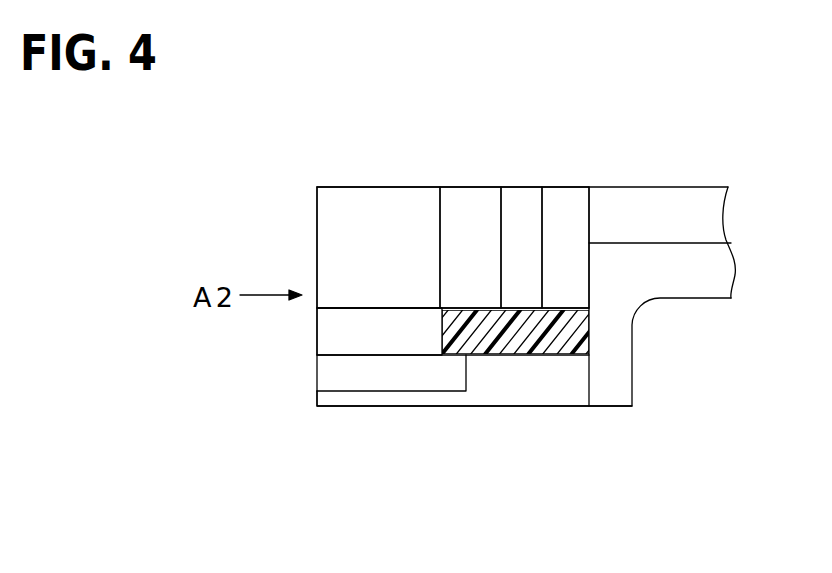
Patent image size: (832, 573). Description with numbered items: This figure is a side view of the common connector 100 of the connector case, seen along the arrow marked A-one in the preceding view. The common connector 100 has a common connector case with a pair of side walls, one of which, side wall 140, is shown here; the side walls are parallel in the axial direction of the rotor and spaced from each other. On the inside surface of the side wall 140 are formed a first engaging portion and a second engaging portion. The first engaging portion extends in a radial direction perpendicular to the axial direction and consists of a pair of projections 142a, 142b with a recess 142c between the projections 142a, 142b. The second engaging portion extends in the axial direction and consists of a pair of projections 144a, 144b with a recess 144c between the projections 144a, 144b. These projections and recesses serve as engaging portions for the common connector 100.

The common connector 100 is at (550, 152).
The side wall 140 is at (376, 209).
The projection 142a is at (338, 337).
The projection 142b is at (344, 398).
The recess 142c is at (427, 368).
The projection 144a is at (472, 203).
The projection 144b is at (568, 200).
The recess 144c is at (522, 202).